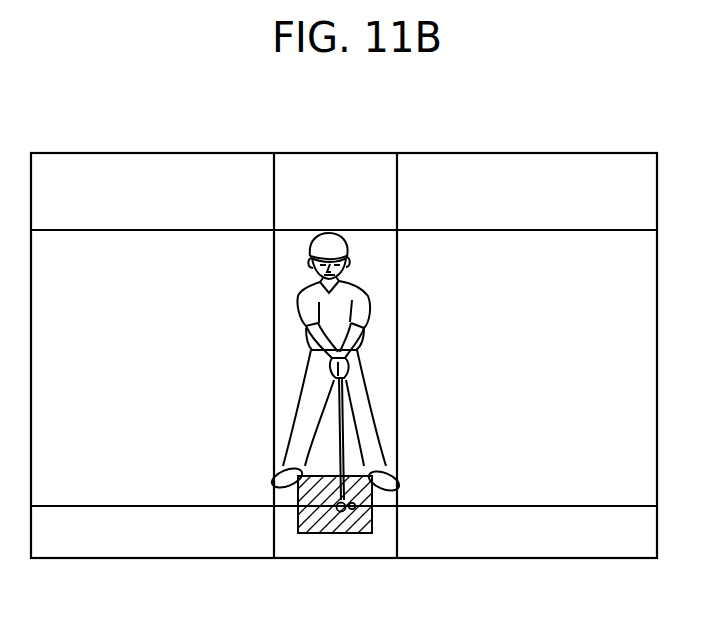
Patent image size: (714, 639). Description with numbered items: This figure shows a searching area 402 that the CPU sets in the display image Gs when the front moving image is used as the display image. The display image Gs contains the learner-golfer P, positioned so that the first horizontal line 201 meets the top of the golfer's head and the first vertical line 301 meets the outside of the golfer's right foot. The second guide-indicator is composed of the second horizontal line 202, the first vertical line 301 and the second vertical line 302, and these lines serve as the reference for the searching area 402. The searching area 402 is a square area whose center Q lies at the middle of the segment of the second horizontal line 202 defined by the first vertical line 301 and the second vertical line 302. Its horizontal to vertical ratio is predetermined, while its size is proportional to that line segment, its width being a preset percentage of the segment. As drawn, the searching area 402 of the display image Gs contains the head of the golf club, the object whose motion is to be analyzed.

The display image Gs is at (568, 152).
The first horizontal line 201 is at (90, 229).
The second horizontal line 202 is at (80, 505).
The first vertical line 301 is at (274, 177).
The second vertical line 302 is at (397, 208).
The learner-golfer P is at (370, 297).
The center of the searching area Q is at (342, 513).
The searching area 402 is at (363, 533).